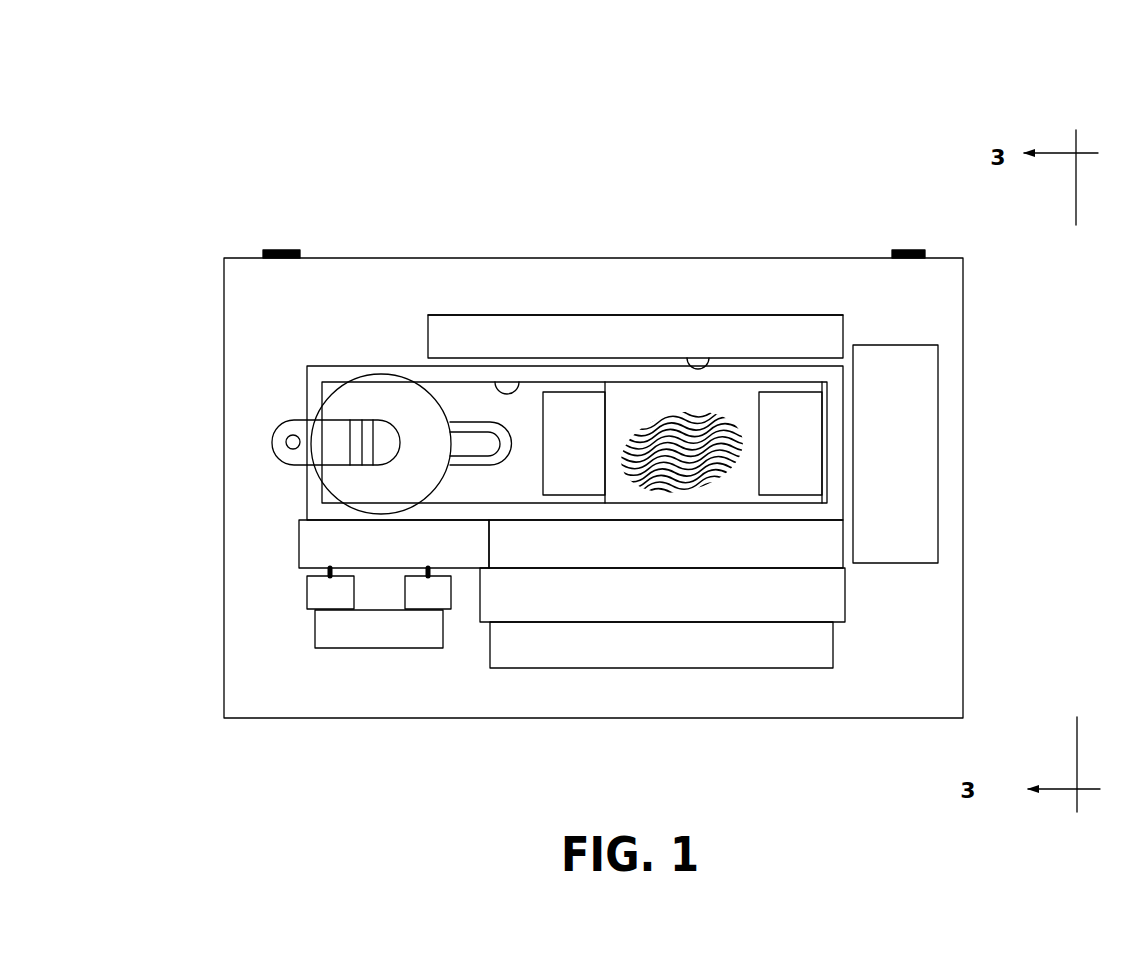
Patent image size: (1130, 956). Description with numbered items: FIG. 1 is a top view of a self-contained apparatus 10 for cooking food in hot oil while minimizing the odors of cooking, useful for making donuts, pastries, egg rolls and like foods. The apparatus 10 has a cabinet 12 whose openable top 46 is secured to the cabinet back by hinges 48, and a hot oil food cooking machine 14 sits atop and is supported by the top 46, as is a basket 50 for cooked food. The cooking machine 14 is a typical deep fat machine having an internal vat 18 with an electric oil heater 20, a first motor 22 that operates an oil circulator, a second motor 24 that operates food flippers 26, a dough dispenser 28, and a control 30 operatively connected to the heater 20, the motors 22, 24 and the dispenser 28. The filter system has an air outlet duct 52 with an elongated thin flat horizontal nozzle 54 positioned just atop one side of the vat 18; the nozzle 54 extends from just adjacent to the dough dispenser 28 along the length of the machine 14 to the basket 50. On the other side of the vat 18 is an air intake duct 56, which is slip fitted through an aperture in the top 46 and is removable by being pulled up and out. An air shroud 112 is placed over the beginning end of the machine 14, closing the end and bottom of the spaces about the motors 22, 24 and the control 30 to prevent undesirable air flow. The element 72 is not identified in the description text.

The self-contained apparatus 10 is at (317, 155).
The cabinet 12 is at (240, 245).
The hot oil food cooking machine 14 is at (393, 340).
The vat 18 is at (517, 392).
The electric oil heater 20 is at (460, 427).
The first motor 22 is at (307, 590).
The second motor 24 is at (448, 602).
The food flippers 26 is at (564, 456).
The dough dispenser 28 is at (357, 375).
The control 30 is at (320, 631).
The openable top 46 is at (633, 292).
The hinges 48 is at (285, 252).
The basket 50 is at (884, 468).
The air outlet duct 52 is at (777, 315).
The nozzle 54 is at (708, 362).
The air intake duct 56 is at (641, 655).
The platen 72 is at (641, 608).
The air shroud 112 is at (297, 535).